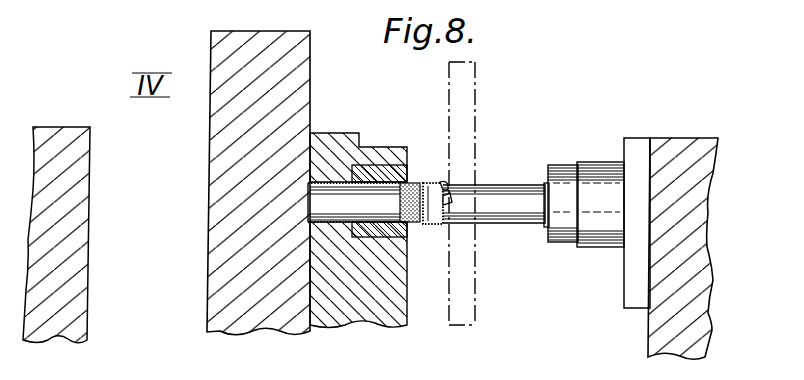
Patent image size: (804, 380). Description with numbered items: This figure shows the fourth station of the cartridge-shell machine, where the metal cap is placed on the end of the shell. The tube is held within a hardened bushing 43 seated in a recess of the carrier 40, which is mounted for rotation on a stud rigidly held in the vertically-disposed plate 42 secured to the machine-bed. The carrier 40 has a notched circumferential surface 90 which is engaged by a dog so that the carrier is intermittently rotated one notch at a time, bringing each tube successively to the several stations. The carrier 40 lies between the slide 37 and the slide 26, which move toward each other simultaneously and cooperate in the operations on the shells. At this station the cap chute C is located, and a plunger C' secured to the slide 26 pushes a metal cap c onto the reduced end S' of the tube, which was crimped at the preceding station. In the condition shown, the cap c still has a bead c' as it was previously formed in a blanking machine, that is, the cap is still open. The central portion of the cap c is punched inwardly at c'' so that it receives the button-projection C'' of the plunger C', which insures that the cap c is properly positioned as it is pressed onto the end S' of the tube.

The slide 37 is at (84, 172).
The vertically-disposed plate 42 is at (210, 244).
The notched circumferential surface 90 is at (333, 133).
The hardened bushing 43 is at (372, 165).
The carrier 40 is at (378, 313).
The slide 26 is at (679, 144).
The cap chute C is at (492, 193).
The plunger C' is at (533, 188).
The button-projection C'' is at (495, 242).
The metal cap c is at (433, 180).
The bead c' is at (481, 211).
The inwardly punched central portion c'' is at (483, 181).
The reduced tube end S' is at (418, 225).